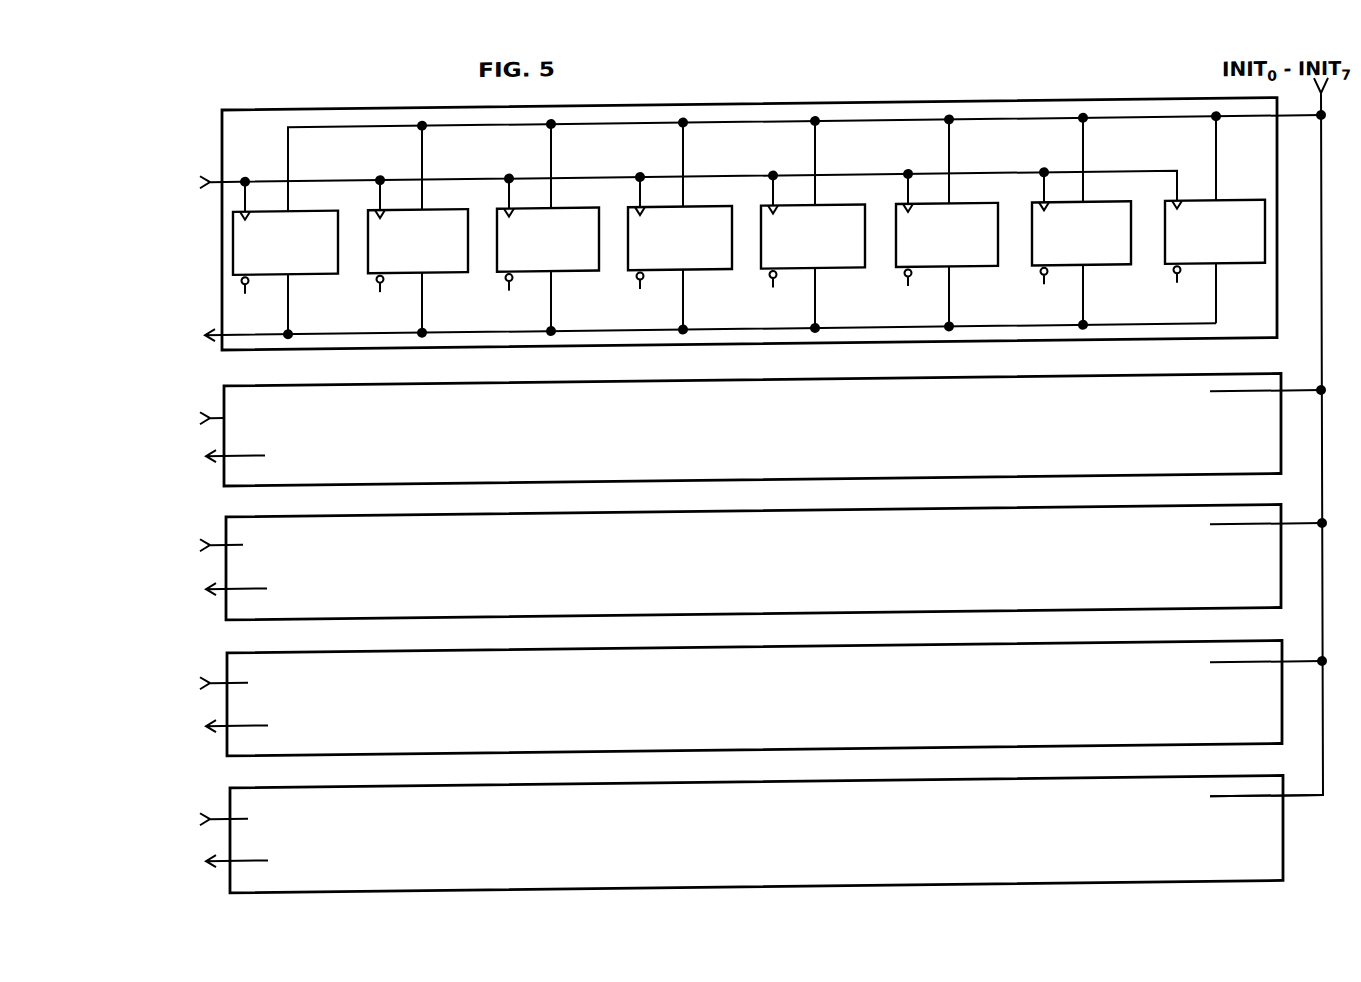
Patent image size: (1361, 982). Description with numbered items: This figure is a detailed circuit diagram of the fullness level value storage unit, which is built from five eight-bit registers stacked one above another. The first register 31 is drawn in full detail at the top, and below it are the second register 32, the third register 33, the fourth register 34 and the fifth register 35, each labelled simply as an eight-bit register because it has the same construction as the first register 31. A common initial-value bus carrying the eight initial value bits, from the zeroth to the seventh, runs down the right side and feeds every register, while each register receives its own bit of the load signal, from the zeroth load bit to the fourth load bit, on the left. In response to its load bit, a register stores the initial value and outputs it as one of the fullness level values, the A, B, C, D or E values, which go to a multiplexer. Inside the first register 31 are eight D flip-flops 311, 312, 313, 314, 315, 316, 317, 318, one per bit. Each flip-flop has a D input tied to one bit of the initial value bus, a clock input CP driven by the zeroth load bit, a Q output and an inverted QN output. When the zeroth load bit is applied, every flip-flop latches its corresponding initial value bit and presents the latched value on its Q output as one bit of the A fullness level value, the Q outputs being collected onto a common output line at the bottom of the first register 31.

The first 8-bit register 31 is at (1277, 331).
The D flip-flop 311 is at (321, 267).
The D flip-flop 312 is at (451, 267).
The D flip-flop 313 is at (582, 267).
The D flip-flop 314 is at (715, 267).
The D flip-flop 315 is at (848, 267).
The D flip-flop 316 is at (981, 267).
The D flip-flop 317 is at (1114, 267).
The D flip-flop 318 is at (1248, 267).
The second 8-bit register 32 is at (1281, 462).
The third 8-bit register 33 is at (1281, 596).
The fourth 8-bit register 34 is at (1282, 732).
The fifth 8-bit register 35 is at (1283, 869).